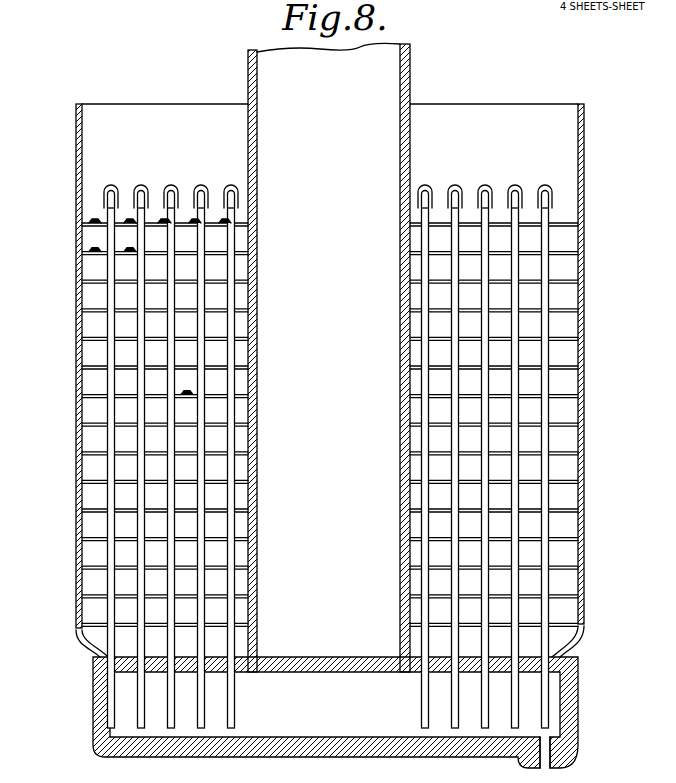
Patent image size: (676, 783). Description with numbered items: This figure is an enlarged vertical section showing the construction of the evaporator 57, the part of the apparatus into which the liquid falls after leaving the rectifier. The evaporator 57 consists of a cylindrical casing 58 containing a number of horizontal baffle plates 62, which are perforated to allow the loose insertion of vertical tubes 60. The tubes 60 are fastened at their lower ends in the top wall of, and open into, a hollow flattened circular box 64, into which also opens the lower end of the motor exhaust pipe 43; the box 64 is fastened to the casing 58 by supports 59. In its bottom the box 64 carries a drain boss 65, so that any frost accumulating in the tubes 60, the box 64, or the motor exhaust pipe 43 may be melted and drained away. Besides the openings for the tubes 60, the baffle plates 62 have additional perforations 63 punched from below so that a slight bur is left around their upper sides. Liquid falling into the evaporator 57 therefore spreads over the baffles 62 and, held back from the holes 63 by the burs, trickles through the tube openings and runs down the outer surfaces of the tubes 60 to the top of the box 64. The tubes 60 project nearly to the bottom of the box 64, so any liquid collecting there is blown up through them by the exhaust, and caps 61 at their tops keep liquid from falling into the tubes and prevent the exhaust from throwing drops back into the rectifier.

The motor exhaust pipe 43 is at (410, 88).
The evaporator 57 is at (480, 150).
The cylindrical casing 58 is at (584, 153).
The supports 59 is at (100, 640).
The vertical tubes 60 is at (240, 548).
The caps 61 is at (202, 190).
The horizontal baffle plates 62 is at (95, 310).
The additional perforations 63 is at (130, 224).
The hollow flattened circular box 64 is at (580, 711).
The drain boss 65 is at (545, 765).